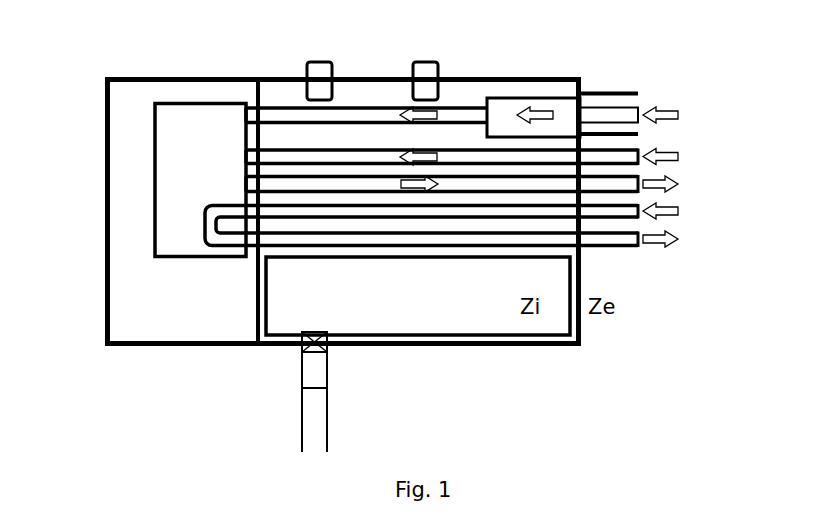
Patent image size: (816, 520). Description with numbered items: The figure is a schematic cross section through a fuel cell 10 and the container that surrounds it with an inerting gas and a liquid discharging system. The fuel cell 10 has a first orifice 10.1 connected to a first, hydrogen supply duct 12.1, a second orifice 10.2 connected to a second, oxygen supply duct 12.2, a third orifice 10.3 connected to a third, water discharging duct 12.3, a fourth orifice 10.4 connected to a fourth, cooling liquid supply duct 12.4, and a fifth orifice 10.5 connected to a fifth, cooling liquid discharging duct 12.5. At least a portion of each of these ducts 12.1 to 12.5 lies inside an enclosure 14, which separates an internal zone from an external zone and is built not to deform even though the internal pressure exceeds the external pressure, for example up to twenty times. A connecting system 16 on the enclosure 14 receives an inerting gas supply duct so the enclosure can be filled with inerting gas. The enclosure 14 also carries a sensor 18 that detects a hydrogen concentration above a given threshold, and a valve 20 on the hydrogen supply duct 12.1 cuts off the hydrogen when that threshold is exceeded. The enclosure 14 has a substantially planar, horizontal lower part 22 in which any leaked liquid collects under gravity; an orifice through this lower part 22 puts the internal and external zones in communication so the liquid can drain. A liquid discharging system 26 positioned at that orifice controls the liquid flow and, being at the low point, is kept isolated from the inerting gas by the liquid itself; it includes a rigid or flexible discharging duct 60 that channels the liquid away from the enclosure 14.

The fuel cell 10 is at (138, 70).
The first orifice 10.1 is at (245, 115).
The second orifice 10.2 is at (245, 156).
The third orifice 10.3 is at (245, 186).
The fourth orifice 10.4 is at (213, 218).
The fifth orifice 10.5 is at (250, 243).
The hydrogen supply duct 12.1 is at (290, 113).
The oxygen supply duct 12.2 is at (358, 157).
The water discharging duct 12.3 is at (560, 187).
The cooling liquid supply duct 12.4 is at (545, 213).
The cooling liquid discharging duct 12.5 is at (537, 243).
The enclosure 14 is at (502, 69).
The connecting system 16 is at (318, 77).
The sensor 18 is at (424, 77).
The valve 20 is at (566, 85).
The lower part 22 is at (462, 341).
The liquid discharging system 26 is at (326, 322).
The discharging duct 60 is at (328, 402).